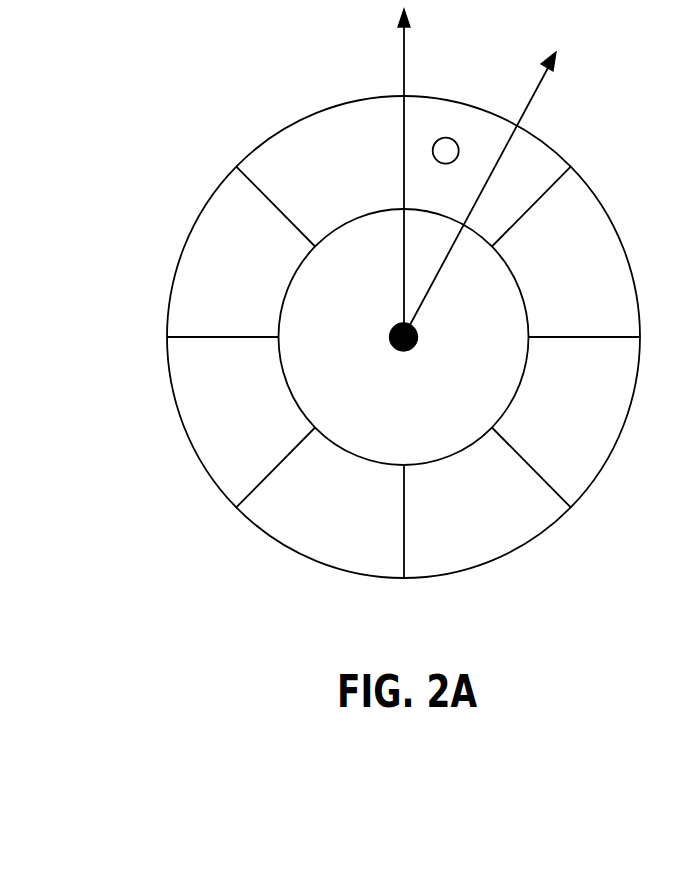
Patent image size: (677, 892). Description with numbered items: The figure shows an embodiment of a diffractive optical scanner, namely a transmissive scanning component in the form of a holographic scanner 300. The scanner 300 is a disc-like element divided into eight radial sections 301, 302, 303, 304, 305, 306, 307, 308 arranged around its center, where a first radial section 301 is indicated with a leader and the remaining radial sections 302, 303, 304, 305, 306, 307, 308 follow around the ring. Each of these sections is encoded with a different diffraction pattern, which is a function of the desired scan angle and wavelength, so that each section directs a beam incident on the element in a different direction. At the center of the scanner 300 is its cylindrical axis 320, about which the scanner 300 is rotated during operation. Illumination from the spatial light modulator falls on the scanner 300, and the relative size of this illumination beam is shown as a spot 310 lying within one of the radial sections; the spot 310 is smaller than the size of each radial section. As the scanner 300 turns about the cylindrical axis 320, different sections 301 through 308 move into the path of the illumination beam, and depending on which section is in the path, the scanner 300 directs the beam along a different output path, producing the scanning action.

The holographic scanner 300 is at (145, 528).
The radial section 301 is at (515, 180).
The radial section 302 is at (566, 272).
The radial section 303 is at (566, 400).
The radial section 304 is at (468, 498).
The radial section 305 is at (330, 498).
The radial section 306 is at (232, 400).
The radial section 307 is at (232, 272).
The radial section 308 is at (330, 173).
The spot 310 is at (446, 150).
The cylindrical axis 320 is at (395, 353).